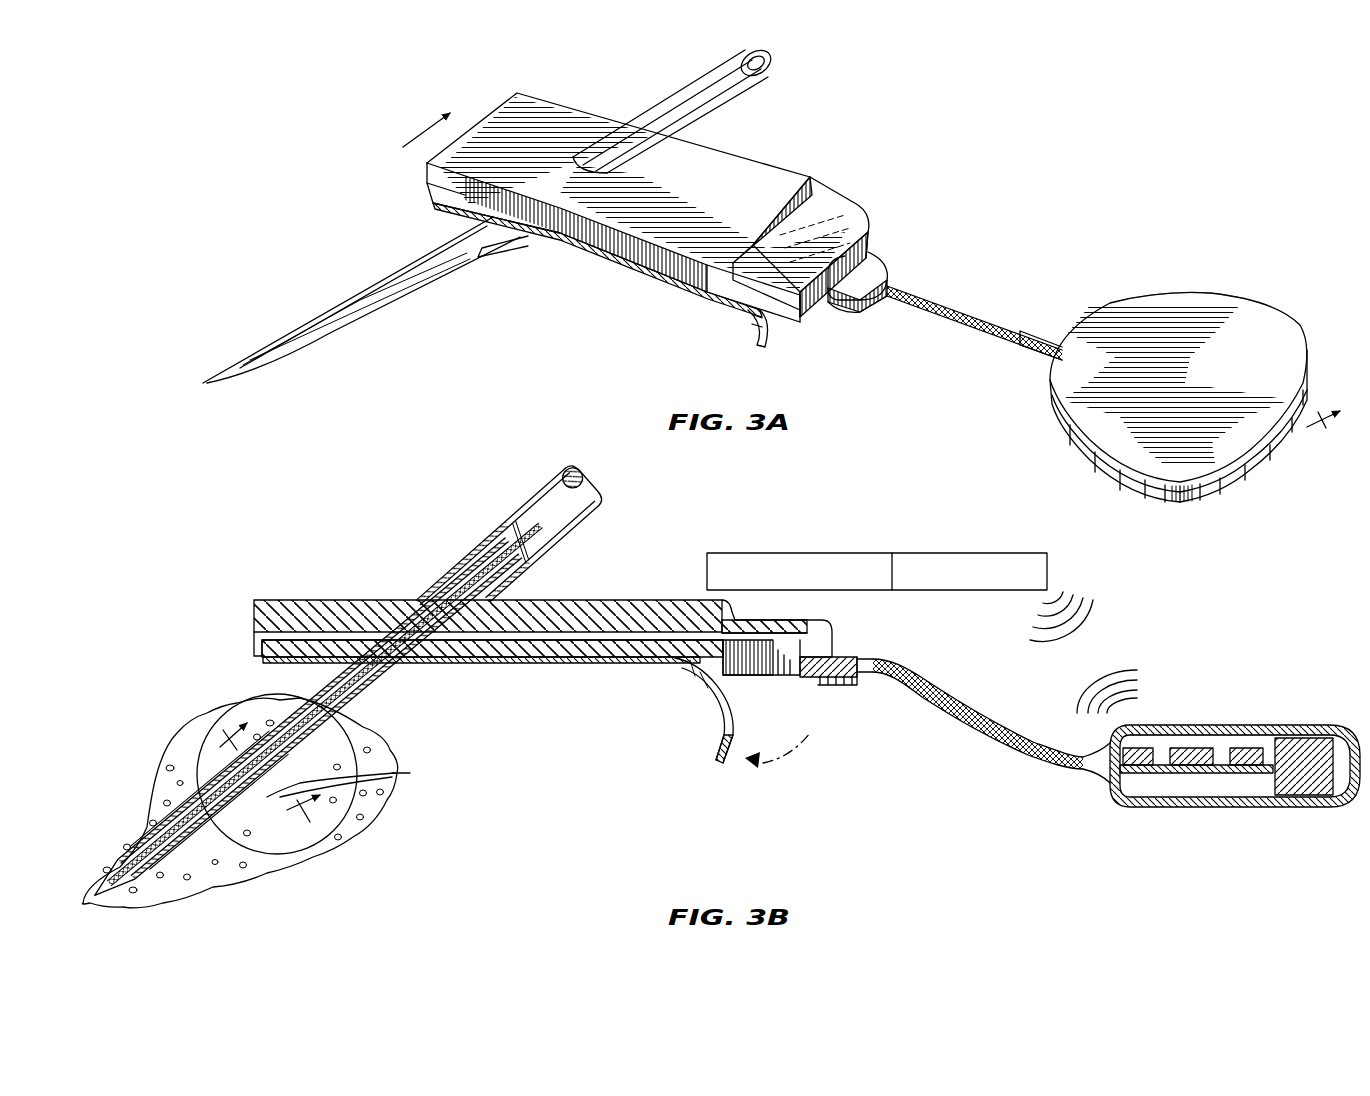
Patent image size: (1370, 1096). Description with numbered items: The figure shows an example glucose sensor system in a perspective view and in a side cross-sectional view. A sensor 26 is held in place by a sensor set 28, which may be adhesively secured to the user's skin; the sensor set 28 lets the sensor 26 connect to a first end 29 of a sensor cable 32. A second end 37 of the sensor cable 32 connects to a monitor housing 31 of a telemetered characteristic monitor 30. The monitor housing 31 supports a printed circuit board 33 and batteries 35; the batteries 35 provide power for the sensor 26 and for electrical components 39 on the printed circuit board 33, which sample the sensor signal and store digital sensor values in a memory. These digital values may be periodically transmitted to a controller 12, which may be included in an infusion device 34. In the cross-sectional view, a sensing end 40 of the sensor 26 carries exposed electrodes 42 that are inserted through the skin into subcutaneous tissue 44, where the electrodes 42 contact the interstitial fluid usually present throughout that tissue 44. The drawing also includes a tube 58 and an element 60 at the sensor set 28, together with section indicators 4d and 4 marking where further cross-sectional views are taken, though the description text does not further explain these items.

In FIG. 3A, the sensor set 28 is at (605, 100).
In FIG. 3B, the sensor set 28 is at (470, 495).
In FIG. 3A, the tubing 58 is at (748, 90).
In FIG. 3B, the tubing 58 is at (541, 486).
In FIG. 3A, the sensor 26 is at (327, 333).
In FIG. 3B, the sensor 26 is at (572, 640).
In FIG. 3A, the sheath 60 is at (477, 255).
In FIG. 3B, the sheath 60 is at (275, 822).
In FIG. 3A, the section line 4d is at (856, 299).
In FIG. 3B, the section line 4 is at (262, 779).
In FIG. 3A, the first end of sensor cable 29 is at (890, 283).
In FIG. 3B, the first end of sensor cable 29 is at (873, 658).
In FIG. 3A, the sensor cable 32 is at (977, 313).
In FIG. 3B, the sensor cable 32 is at (970, 722).
In FIG. 3A, the second end of sensor cable 37 is at (1027, 337).
In FIG. 3B, the second end of sensor cable 37 is at (1085, 775).
In FIG. 3A, the telemetered characteristic monitor 30 is at (1150, 225).
In FIG. 3B, the telemetered characteristic monitor 30 is at (1252, 680).
In FIG. 3A, the monitor housing 31 is at (1222, 318).
In FIG. 3B, the monitor housing 31 is at (1184, 725).
In FIG. 3B, the infusion device 34 is at (797, 553).
In FIG. 3B, the controller 12 is at (967, 553).
In FIG. 3B, the printed circuit board 33 is at (1150, 800).
In FIG. 3B, the electrical components 39 is at (1240, 765).
In FIG. 3B, the batteries 35 is at (1327, 740).
In FIG. 3B, the subcutaneous tissue 44 is at (105, 845).
In FIG. 3B, the exposed electrodes 42 is at (354, 779).
In FIG. 3B, the sensing end 40 is at (234, 838).